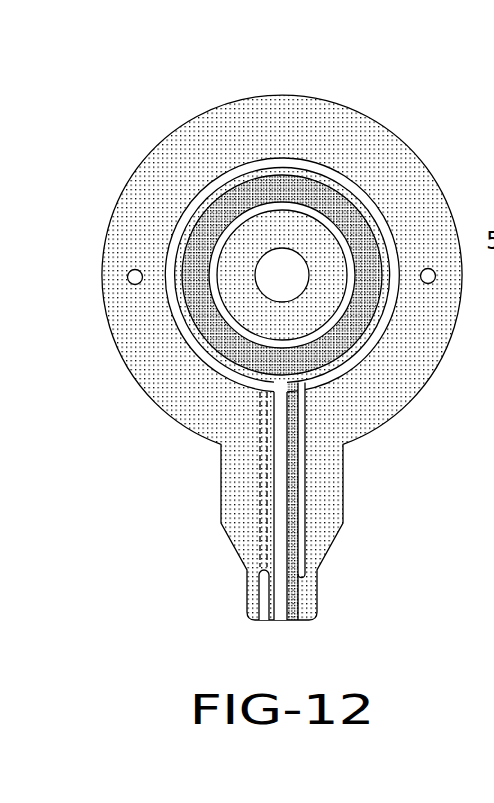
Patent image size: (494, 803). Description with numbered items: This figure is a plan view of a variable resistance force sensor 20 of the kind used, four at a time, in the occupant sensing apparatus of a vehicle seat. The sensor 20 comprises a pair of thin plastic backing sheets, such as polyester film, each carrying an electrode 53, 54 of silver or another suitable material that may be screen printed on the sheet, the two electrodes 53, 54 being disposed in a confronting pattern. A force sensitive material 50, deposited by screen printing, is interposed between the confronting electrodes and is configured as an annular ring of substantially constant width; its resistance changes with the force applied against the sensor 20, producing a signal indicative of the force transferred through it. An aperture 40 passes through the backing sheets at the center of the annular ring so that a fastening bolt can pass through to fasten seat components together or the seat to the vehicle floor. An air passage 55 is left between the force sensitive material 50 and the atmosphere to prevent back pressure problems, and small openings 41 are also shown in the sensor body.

The sensor 20 is at (358, 128).
The aperture 40 is at (268, 288).
The mounting holes 41 is at (131, 281).
The force sensitive material 50 is at (224, 212).
The electrode 53 is at (298, 488).
The electrode 54 is at (265, 510).
The air passage 55 is at (283, 535).